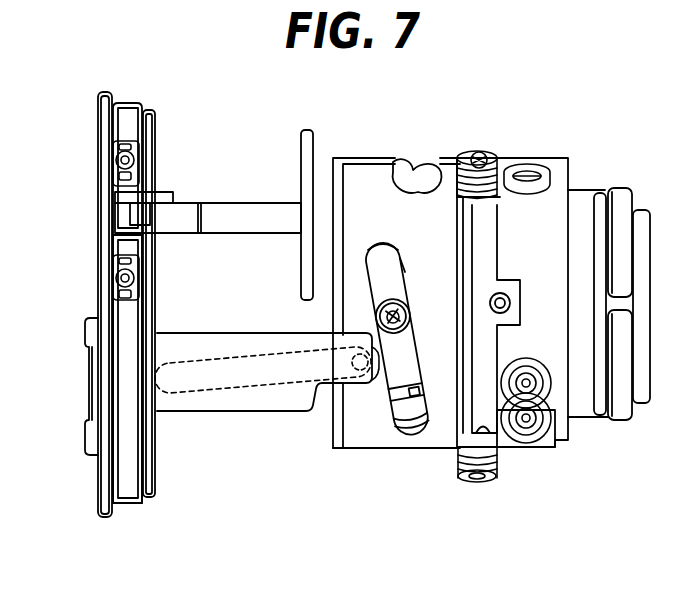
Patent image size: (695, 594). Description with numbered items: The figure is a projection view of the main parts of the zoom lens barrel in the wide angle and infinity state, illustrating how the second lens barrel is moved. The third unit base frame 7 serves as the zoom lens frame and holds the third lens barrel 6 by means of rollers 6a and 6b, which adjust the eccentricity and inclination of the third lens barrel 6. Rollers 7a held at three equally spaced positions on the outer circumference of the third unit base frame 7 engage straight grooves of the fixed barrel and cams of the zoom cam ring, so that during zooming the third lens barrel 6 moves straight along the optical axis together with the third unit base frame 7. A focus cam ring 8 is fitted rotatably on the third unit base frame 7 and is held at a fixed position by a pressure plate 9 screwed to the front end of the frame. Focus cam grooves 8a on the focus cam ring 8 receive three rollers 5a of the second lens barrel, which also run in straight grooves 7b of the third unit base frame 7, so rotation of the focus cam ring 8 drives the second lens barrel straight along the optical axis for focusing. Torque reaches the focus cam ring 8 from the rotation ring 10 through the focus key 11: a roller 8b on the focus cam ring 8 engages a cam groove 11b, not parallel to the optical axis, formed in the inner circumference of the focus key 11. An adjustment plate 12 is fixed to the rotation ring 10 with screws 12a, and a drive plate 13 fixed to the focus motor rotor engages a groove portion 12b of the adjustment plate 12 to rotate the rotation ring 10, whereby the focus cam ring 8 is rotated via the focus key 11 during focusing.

The rollers 5a is at (403, 265).
The third lens barrel 6 is at (614, 198).
The roller 6a is at (530, 160).
The roller 6b is at (535, 393).
The third unit base frame 7 is at (572, 160).
The rollers 7a is at (483, 150).
The straight grooves 7b is at (386, 300).
The focus cam ring 8 is at (413, 440).
The focus cam grooves 8a is at (378, 240).
The roller 8b is at (360, 366).
The pressure plate 9 is at (333, 449).
The rotation ring 10 is at (130, 120).
The focus key 11 is at (250, 412).
The cam groove 11b is at (195, 393).
The adjustment plate 12 is at (125, 245).
The screws 12a is at (118, 160).
The groove portion 12b is at (123, 208).
The drive plate 13 is at (260, 207).